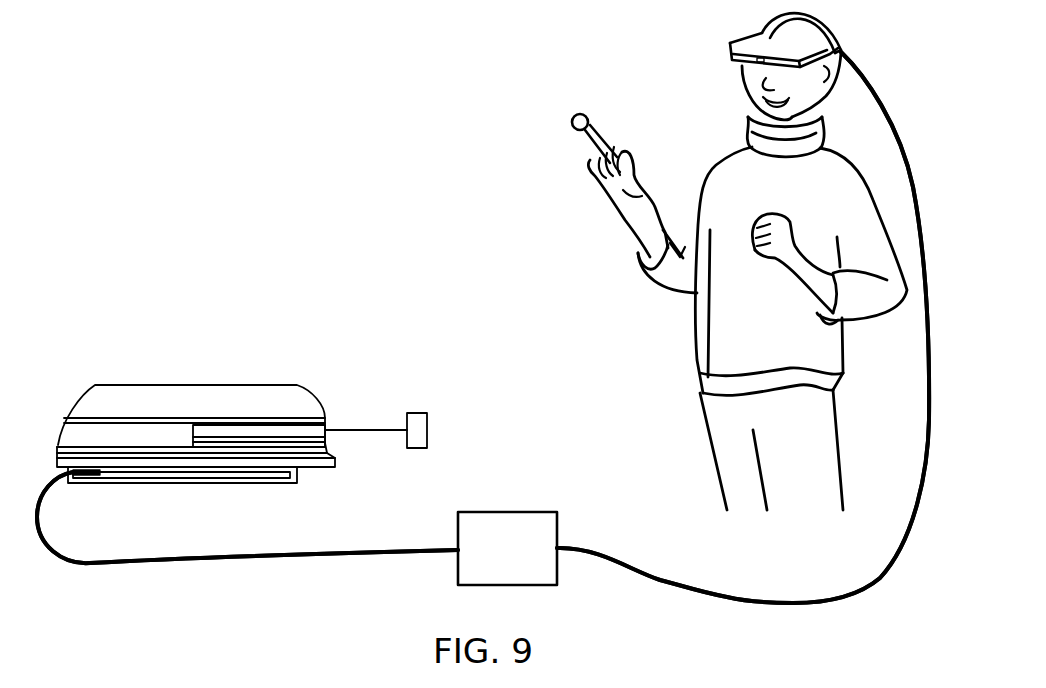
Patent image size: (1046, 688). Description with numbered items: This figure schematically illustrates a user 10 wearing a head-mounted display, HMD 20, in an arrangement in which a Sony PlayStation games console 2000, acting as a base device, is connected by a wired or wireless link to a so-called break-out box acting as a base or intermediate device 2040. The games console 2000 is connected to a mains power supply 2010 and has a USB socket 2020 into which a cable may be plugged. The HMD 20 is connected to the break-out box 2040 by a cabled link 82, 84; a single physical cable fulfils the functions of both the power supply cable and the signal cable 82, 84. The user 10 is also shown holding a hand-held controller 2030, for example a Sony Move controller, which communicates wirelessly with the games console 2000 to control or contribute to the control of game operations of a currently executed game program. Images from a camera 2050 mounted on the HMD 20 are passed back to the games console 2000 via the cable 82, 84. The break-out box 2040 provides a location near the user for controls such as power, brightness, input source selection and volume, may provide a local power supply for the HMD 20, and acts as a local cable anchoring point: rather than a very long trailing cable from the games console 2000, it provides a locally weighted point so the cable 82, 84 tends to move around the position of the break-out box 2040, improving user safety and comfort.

The user 10 is at (696, 158).
The HMD 20 is at (832, 55).
The USB socket 2020 is at (733, 57).
The hand-held controller 2030 is at (577, 116).
The games console 2000 is at (203, 385).
The mains power supply 2010 is at (417, 410).
The camera 2050 is at (92, 480).
The break-out box 2040 is at (507, 510).
The cable 82 is at (740, 560).
The cable 84 is at (483, 327).